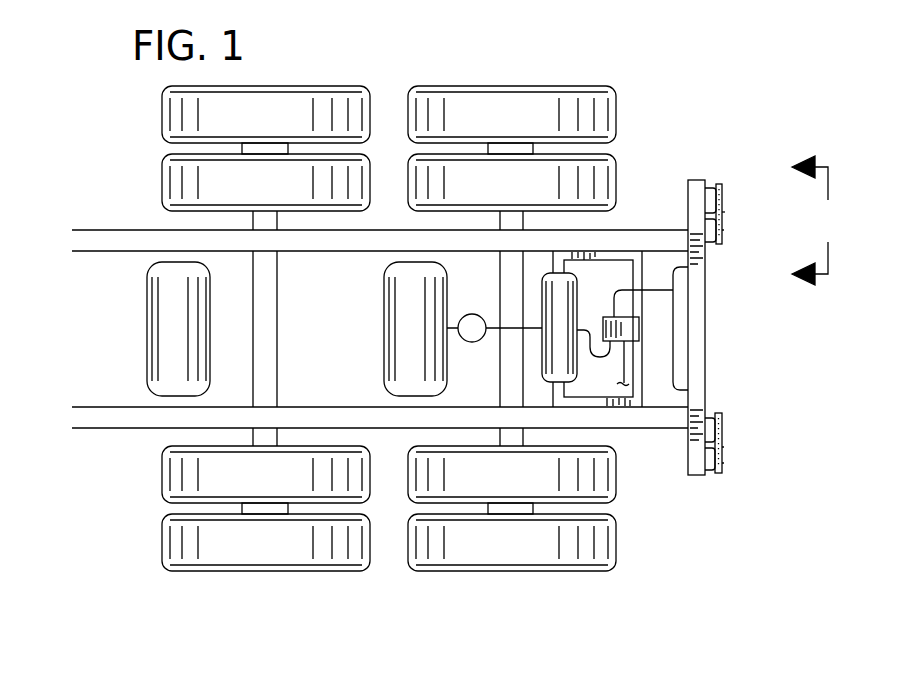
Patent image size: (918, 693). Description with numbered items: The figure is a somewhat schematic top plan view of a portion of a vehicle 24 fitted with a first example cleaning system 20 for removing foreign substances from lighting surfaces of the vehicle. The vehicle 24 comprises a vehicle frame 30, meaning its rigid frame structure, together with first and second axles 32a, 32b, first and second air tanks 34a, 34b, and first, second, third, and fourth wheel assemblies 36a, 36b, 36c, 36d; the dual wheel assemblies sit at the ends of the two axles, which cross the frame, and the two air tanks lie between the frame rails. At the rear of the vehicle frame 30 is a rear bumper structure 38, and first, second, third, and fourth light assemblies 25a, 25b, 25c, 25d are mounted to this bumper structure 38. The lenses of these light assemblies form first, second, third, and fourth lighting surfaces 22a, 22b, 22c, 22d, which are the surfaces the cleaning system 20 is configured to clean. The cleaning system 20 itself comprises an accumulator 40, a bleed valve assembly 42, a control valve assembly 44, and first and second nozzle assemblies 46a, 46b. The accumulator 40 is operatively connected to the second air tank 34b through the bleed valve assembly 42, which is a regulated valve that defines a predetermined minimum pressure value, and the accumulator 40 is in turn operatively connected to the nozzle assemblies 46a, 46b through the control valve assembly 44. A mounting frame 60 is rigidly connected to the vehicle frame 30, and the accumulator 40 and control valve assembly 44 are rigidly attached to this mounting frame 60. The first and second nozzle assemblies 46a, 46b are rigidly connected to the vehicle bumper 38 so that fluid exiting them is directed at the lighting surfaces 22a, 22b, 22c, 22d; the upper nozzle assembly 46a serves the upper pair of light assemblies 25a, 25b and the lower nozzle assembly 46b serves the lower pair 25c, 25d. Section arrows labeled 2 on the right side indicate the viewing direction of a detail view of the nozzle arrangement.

The cleaning system 20 is at (697, 95).
The vehicle 24 is at (92, 207).
The vehicle frame 30 is at (118, 424).
The first axle 32a is at (270, 298).
The second axle 32b is at (505, 355).
The first air tank 34a is at (163, 325).
The second air tank 34b is at (402, 337).
The first wheel assembly 36a is at (149, 122).
The second wheel assembly 36b is at (149, 537).
The third wheel assembly 36c is at (563, 73).
The fourth wheel assembly 36d is at (619, 574).
The rear bumper structure 38 is at (705, 340).
The accumulator 40 is at (570, 358).
The bleed valve assembly 42 is at (473, 314).
The control valve assembly 44 is at (637, 330).
The first nozzle assembly 46a is at (725, 212).
The second nozzle assembly 46b is at (723, 447).
The mounting frame 60 is at (638, 272).
The first lighting surface 22a is at (722, 197).
The second lighting surface 22b is at (723, 233).
The third lighting surface 22c is at (722, 418).
The fourth lighting surface 22d is at (722, 463).
The first light assembly 25a is at (708, 189).
The second light assembly 25b is at (712, 242).
The third light assembly 25c is at (715, 433).
The fourth light assembly 25d is at (715, 456).
The section line of FIG. 2 is at (801, 220).